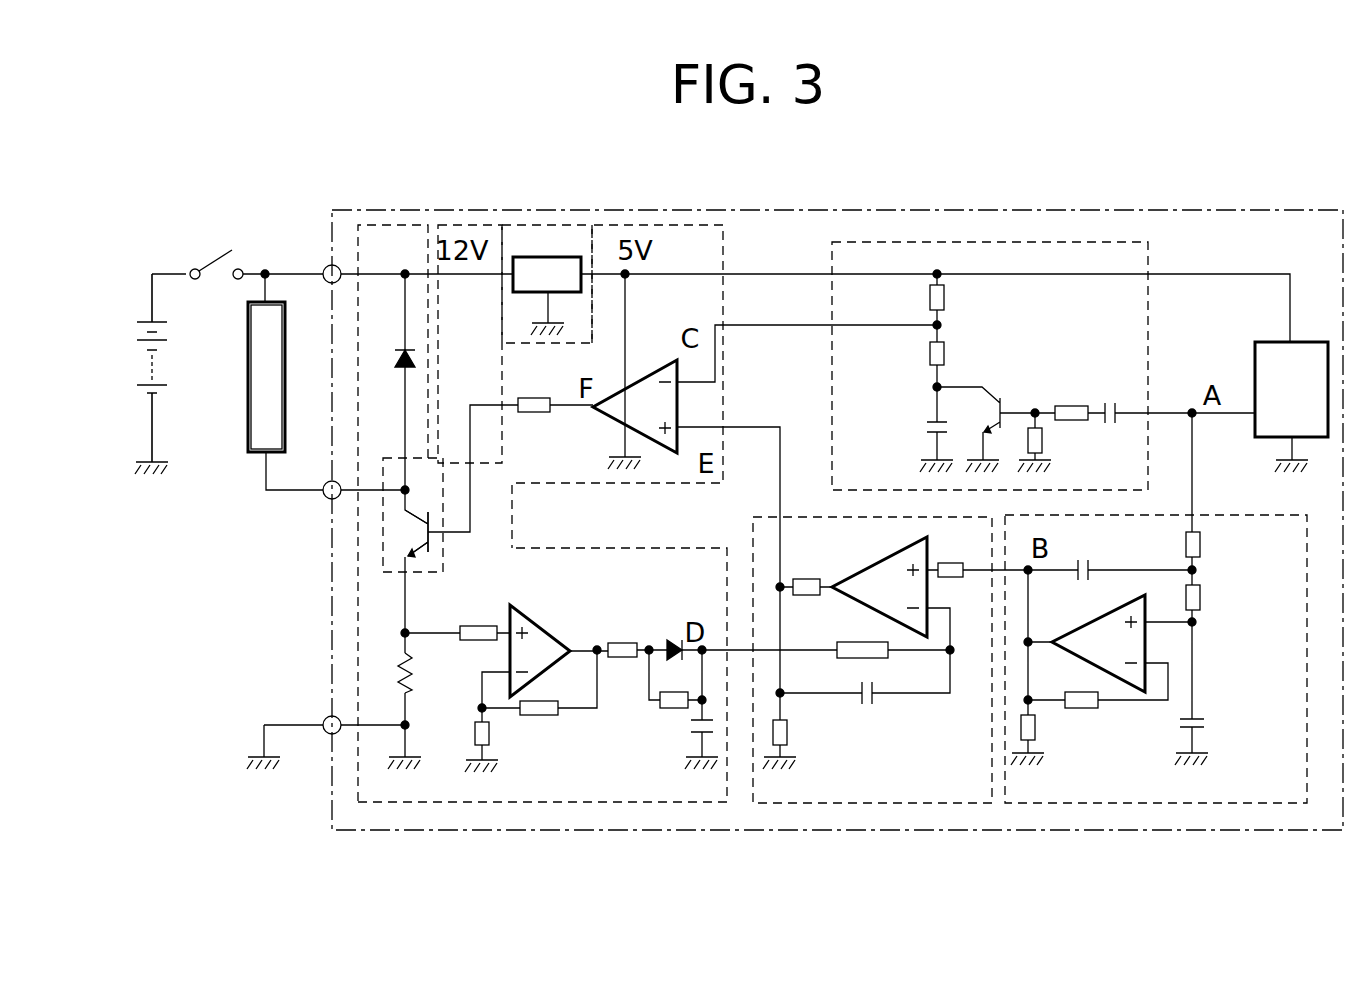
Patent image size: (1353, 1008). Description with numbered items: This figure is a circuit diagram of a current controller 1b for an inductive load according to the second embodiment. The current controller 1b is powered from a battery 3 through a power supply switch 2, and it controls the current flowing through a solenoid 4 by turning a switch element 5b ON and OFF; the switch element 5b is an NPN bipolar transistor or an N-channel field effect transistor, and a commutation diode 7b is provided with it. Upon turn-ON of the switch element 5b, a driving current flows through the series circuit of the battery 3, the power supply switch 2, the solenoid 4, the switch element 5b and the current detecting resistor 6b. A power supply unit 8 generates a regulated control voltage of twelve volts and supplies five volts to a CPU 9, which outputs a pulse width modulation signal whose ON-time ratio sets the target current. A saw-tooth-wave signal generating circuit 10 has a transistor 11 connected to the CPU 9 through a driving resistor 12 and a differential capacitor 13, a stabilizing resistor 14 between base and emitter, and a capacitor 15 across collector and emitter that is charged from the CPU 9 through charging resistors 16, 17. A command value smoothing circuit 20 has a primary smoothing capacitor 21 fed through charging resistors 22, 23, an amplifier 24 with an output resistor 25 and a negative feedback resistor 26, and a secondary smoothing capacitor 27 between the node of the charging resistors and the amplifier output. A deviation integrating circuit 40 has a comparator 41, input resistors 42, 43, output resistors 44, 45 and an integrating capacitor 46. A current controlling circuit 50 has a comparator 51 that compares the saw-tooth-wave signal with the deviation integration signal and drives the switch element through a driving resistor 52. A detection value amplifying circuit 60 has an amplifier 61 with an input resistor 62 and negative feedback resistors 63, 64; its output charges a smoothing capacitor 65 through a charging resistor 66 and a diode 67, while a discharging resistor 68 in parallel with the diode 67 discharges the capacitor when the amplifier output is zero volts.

The current controller 1b is at (830, 210).
The power supply switch 2 is at (207, 260).
The battery 3 is at (143, 368).
The solenoid 4 is at (252, 452).
The switch element 5b is at (413, 536).
The current detecting resistor 6b is at (398, 676).
The commutation diode 7b is at (415, 358).
The power supply unit 8 is at (548, 257).
The CPU 9 is at (1290, 342).
The saw-tooth-wave signal generating circuit 10 is at (1010, 242).
The transistor 11 is at (1000, 398).
The driving resistor 12 is at (1072, 406).
The differential capacitor 13 is at (1112, 403).
The stabilizing resistor 14 is at (1042, 440).
The capacitor 15 is at (930, 422).
The charging resistor 16 is at (930, 297).
The charging resistor 17 is at (930, 354).
The command value smoothing circuit 20 is at (1228, 515).
The primary smoothing capacitor 21 is at (1204, 723).
The charging resistor 22 is at (1200, 545).
The charging resistor 23 is at (1200, 598).
The amplifier 24 is at (1145, 645).
The output resistor 25 is at (1035, 728).
The negative feedback resistor 26 is at (1085, 708).
The secondary smoothing capacitor 27 is at (1090, 565).
The deviation integrating circuit 40 is at (810, 517).
The comparator 41 is at (867, 568).
The input resistor 42 is at (950, 563).
The input resistor 43 is at (880, 658).
The output resistor 44 is at (806, 595).
The output resistor 45 is at (787, 733).
The integrating capacitor 46 is at (870, 704).
The current controlling circuit 50 is at (603, 226).
The comparator 51 is at (643, 378).
The driving resistor 52 is at (534, 412).
The detection value amplifying circuit 60 is at (565, 548).
The amplifier 61 is at (535, 618).
The input resistor 62 is at (478, 626).
The negative feedback resistor 63 is at (542, 715).
The negative feedback resistor 64 is at (488, 745).
The smoothing capacitor 65 is at (695, 740).
The charging resistor 66 is at (622, 643).
The diode 67 is at (674, 640).
The discharging resistor 68 is at (670, 708).